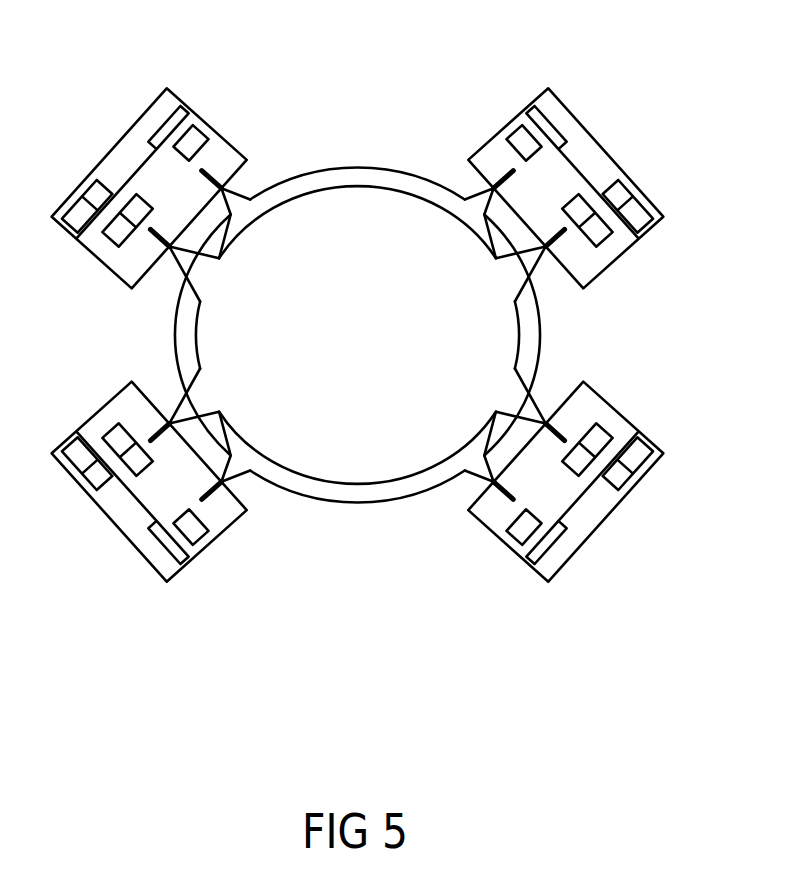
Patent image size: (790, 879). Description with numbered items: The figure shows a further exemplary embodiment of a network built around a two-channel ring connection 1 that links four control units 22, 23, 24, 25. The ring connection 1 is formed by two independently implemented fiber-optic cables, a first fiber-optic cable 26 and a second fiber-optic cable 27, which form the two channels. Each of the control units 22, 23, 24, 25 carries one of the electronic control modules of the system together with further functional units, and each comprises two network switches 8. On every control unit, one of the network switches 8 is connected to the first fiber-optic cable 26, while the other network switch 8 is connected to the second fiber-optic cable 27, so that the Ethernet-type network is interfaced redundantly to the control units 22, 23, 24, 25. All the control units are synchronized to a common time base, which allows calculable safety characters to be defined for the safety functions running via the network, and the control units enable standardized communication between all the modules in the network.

The ring connection 1 is at (428, 273).
The network switch 8 is at (203, 170).
The control unit 22 is at (602, 148).
The control unit 23 is at (608, 515).
The control unit 24 is at (108, 516).
The control unit 25 is at (108, 153).
The first fiber-optic cable 26 is at (541, 331).
The second fiber-optic cable 27 is at (518, 323).